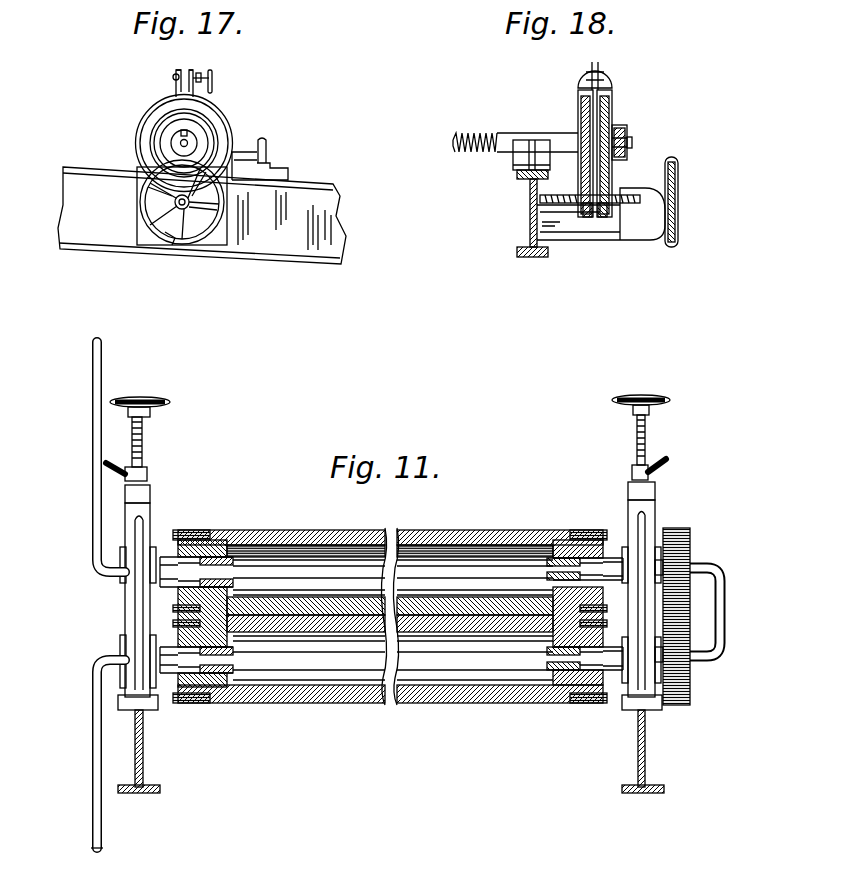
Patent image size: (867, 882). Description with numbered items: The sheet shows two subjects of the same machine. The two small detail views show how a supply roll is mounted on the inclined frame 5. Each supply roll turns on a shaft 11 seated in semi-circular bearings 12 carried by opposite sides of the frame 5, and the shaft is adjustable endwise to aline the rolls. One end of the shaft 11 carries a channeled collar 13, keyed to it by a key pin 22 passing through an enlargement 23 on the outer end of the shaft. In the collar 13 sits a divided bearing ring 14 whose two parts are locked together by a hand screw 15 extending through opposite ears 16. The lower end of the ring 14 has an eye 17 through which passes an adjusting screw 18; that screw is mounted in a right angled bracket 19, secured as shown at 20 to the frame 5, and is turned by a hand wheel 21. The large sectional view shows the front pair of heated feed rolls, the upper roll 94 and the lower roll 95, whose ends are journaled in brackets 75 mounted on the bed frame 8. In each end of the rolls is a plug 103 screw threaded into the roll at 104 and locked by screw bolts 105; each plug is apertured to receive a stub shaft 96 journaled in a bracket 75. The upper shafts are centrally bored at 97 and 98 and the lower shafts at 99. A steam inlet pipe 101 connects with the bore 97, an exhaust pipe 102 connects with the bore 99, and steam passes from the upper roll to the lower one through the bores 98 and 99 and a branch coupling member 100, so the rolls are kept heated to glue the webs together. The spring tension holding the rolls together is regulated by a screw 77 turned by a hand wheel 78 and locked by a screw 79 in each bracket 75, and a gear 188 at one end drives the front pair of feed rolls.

In FIG. 17, the inclined frame 5 is at (326, 226).
In FIG. 18, the inclined frame 5 is at (535, 258).
In FIG. 11, the bed frame 8 is at (152, 793).
In FIG. 17, the shaft 11 is at (199, 142).
In FIG. 18, the shaft 11 is at (557, 132).
In FIG. 18, the semi-circular bearing 12 is at (516, 160).
In FIG. 17, the channeled collar 13 is at (206, 124).
In FIG. 18, the channeled collar 13 is at (609, 113).
In FIG. 17, the divided bearing ring 14 is at (148, 113).
In FIG. 18, the divided bearing ring 14 is at (585, 108).
In FIG. 17, the hand screw 15 is at (210, 70).
In FIG. 18, the hand screw 15 is at (613, 73).
In FIG. 17, the ears 16 is at (184, 70).
In FIG. 18, the ears 16 is at (599, 66).
In FIG. 17, the eye 17 is at (152, 190).
In FIG. 18, the eye 17 is at (600, 218).
In FIG. 17, the adjusting screw 18 is at (175, 205).
In FIG. 18, the adjusting screw 18 is at (572, 206).
In FIG. 17, the right angled bracket 19 is at (172, 239).
In FIG. 18, the right angled bracket 19 is at (630, 241).
In FIG. 17, the bracket fastening 20 is at (222, 243).
In FIG. 18, the bracket fastening 20 is at (530, 236).
In FIG. 17, the hand wheel 21 is at (185, 246).
In FIG. 18, the hand wheel 21 is at (679, 226).
In FIG. 17, the key pin 22 is at (154, 127).
In FIG. 18, the key pin 22 is at (628, 135).
In FIG. 17, the enlargement 23 is at (173, 146).
In FIG. 18, the enlargement 23 is at (633, 144).
In FIG. 11, the bracket 75 is at (126, 600).
In FIG. 11, the screw 77 is at (143, 445).
In FIG. 11, the hand wheel 78 is at (170, 402).
In FIG. 11, the locking screw 79 is at (148, 473).
In FIG. 11, the upper feed roll 94 is at (386, 530).
In FIG. 11, the lower feed roll 95 is at (373, 703).
In FIG. 11, the stub shaft 96 is at (256, 548).
In FIG. 11, the bore 97 is at (236, 578).
In FIG. 11, the bore 98 is at (552, 567).
In FIG. 11, the bore 99 is at (289, 662).
In FIG. 11, the branch coupling member 100 is at (720, 606).
In FIG. 11, the steam inlet pipe 101 is at (92, 516).
In FIG. 11, the exhaust pipe 102 is at (92, 775).
In FIG. 11, the plug 103 is at (221, 545).
In FIG. 11, the screw thread 104 is at (212, 538).
In FIG. 11, the screw bolt 105 is at (178, 530).
In FIG. 11, the gear 188 is at (690, 541).